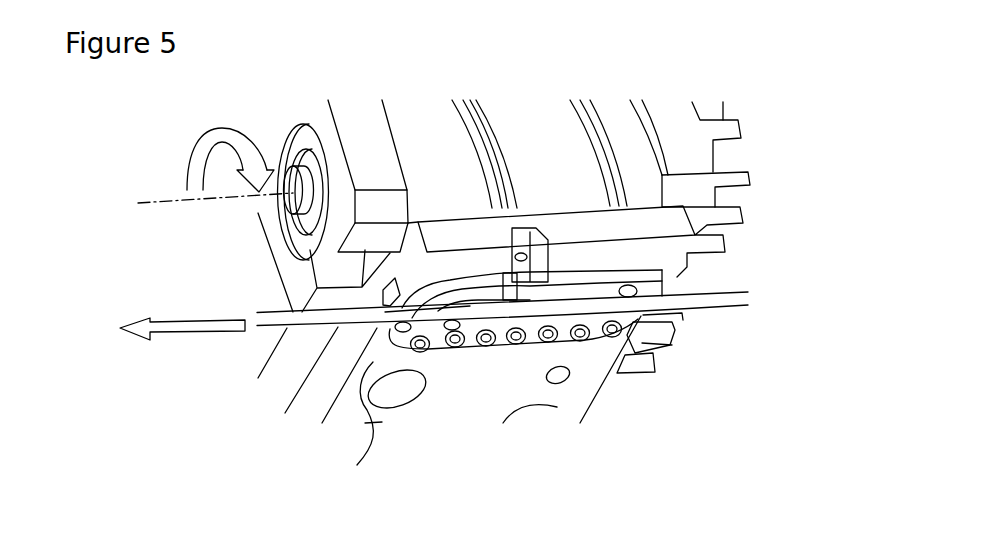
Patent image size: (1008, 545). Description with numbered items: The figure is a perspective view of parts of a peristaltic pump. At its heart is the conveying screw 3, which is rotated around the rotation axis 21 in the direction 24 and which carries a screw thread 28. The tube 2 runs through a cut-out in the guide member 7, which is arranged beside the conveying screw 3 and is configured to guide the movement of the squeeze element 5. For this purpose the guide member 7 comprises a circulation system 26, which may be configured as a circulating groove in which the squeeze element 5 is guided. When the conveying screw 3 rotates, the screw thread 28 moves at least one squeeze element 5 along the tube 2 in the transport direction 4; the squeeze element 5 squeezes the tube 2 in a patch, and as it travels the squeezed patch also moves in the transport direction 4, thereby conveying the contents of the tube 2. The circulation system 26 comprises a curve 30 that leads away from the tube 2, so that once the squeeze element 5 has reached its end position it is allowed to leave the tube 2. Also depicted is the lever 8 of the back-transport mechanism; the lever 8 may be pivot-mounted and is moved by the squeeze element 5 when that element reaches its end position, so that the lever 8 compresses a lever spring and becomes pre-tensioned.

The tube 2 is at (750, 280).
The conveying screw 3 is at (437, 128).
The transport direction 4 is at (177, 327).
The squeeze element 5 is at (487, 347).
The guide member 7 is at (368, 422).
The lever 8 is at (507, 283).
The rotation axis 21 is at (158, 205).
The direction 24 is at (246, 143).
The circulation system 26 is at (683, 320).
The screw thread 28 is at (595, 125).
The curve 30 is at (387, 332).